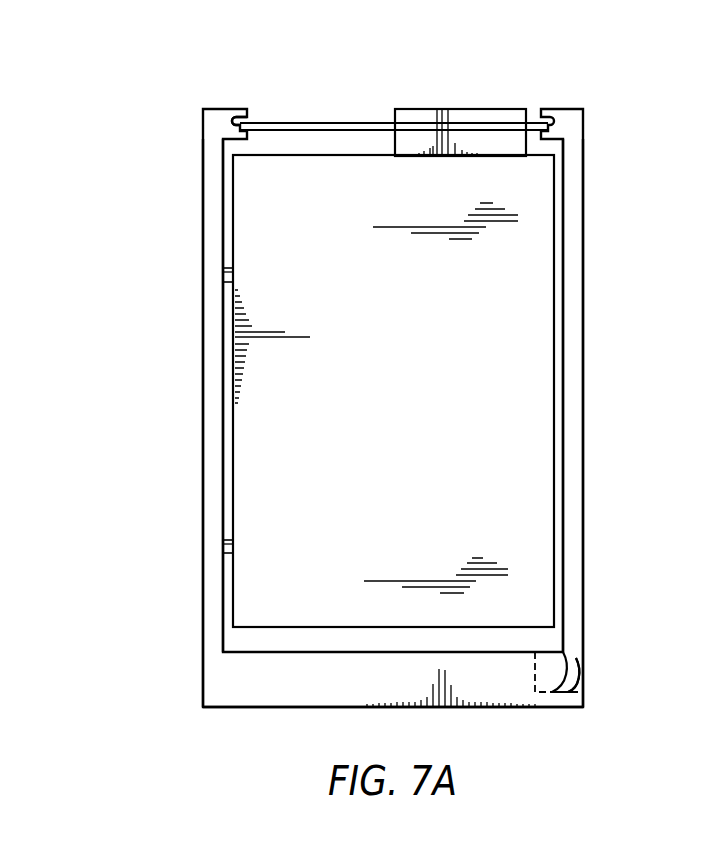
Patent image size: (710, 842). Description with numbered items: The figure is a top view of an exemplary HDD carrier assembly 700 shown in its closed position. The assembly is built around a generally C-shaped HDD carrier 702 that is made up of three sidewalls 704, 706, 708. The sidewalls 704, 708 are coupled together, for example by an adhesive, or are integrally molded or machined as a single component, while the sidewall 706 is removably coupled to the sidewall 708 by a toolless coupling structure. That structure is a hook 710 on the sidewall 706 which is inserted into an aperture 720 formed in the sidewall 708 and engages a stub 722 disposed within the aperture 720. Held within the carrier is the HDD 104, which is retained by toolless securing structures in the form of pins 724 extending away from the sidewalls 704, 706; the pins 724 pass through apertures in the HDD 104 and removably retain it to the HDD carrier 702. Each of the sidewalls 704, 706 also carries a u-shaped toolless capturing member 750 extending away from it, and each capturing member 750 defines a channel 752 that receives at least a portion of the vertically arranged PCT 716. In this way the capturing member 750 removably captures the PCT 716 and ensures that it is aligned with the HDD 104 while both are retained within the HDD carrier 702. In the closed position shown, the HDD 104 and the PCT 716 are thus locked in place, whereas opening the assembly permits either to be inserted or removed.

The HDD 104 is at (410, 443).
The HDD carrier assembly 700 is at (300, 69).
The HDD carrier 702 is at (203, 141).
The sidewall 704 is at (222, 318).
The sidewall 706 is at (583, 290).
The sidewall 708 is at (410, 707).
The hook 710 is at (572, 645).
The PCT 716 is at (527, 107).
The aperture 720 is at (553, 694).
The stub 722 is at (585, 683).
The pins 724 is at (222, 268).
The u-shaped toolless capturing member 750 is at (230, 106).
The channel 752 is at (252, 121).